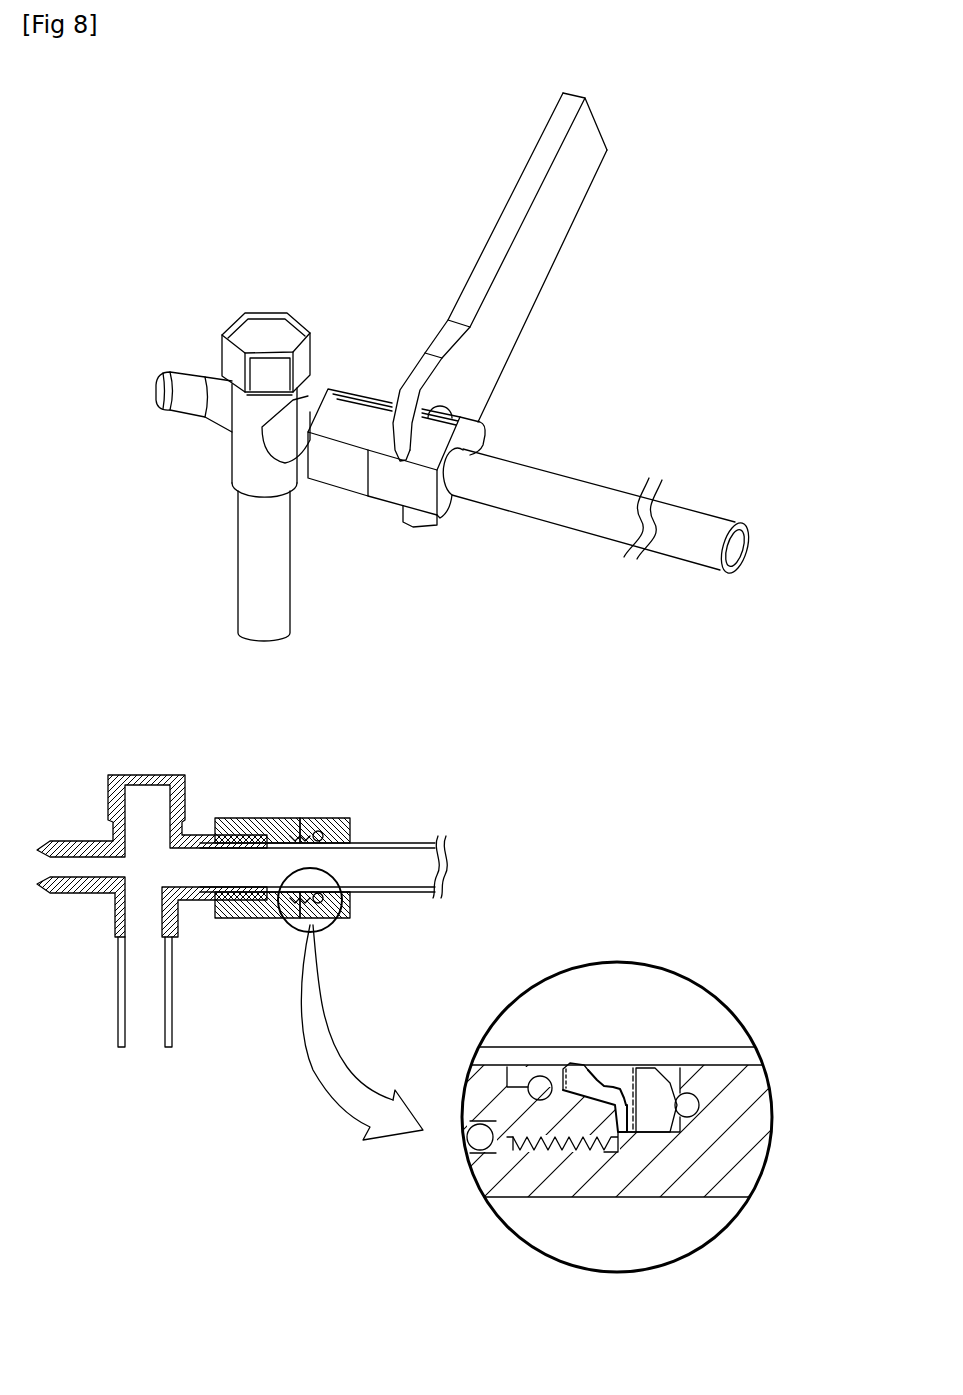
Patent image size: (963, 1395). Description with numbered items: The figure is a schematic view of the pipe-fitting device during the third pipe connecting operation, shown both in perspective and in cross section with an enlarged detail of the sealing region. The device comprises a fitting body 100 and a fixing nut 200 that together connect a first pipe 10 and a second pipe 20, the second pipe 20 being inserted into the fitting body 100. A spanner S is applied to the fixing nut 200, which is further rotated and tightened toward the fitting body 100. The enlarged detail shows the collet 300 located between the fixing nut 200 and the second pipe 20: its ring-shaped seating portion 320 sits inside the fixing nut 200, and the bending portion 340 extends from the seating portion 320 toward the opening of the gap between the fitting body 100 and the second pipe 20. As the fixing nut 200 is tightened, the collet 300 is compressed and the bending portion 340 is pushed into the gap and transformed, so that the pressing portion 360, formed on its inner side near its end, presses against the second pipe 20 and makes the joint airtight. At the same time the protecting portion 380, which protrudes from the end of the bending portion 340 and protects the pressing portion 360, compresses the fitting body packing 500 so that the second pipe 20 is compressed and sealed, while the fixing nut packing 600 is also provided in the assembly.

The first pipe 10 is at (322, 397).
The second pipe 20 is at (581, 492).
The fitting body 100 is at (335, 472).
The fixing nut 200 is at (423, 497).
The collet 300 is at (544, 970).
The seating portion 320 is at (676, 1090).
The bending portion 340 is at (610, 1083).
The pressing portion 360 is at (575, 1090).
The protecting portion 380 is at (563, 1078).
The fitting body packing 500 is at (532, 1077).
The fixing nut packing 600 is at (697, 1088).
The spanner S is at (563, 197).